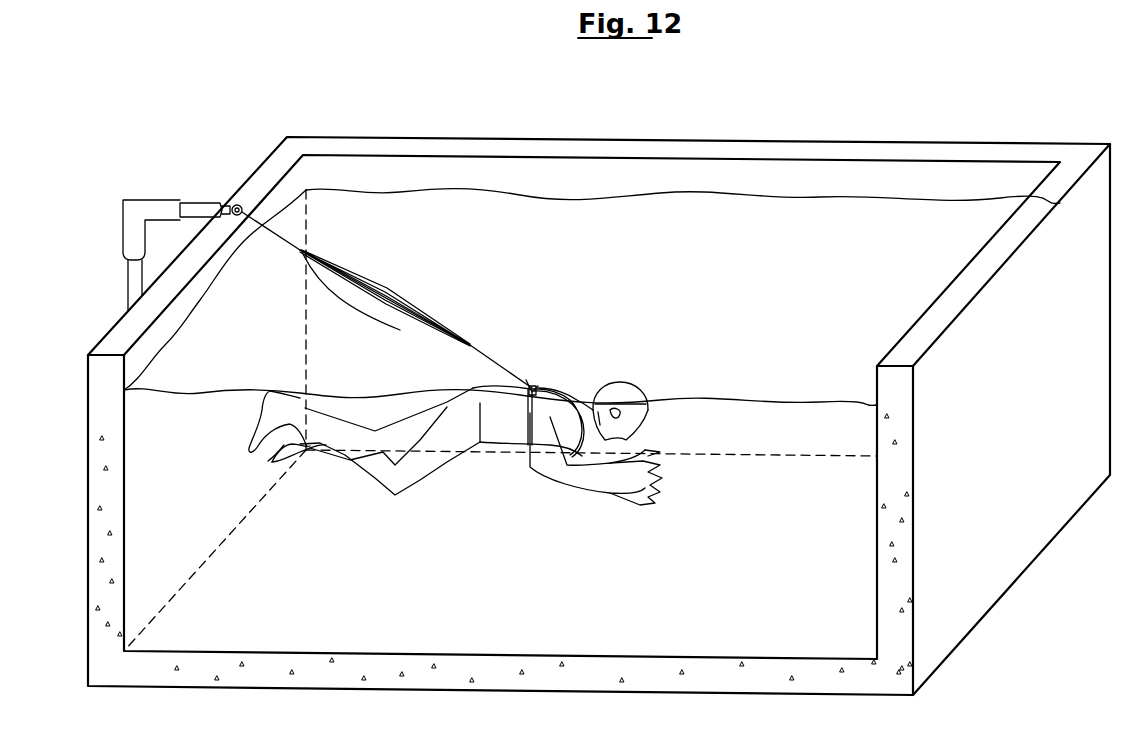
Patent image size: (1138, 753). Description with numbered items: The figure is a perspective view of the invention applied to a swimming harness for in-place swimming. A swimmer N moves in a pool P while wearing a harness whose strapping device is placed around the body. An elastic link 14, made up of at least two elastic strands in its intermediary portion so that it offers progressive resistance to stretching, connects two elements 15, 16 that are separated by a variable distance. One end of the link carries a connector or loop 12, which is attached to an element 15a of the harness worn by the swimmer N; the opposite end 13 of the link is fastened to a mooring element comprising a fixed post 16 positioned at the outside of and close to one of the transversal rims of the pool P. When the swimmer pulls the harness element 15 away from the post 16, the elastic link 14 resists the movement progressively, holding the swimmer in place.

The connector or loop 12 is at (525, 375).
The end of the elastic link 13 is at (206, 146).
The elastic link 14 is at (405, 303).
The element 15 is at (643, 267).
The harness element 15a is at (603, 236).
The fixed post 16 is at (136, 193).
The swimmer N is at (539, 291).
The pool P is at (599, 386).